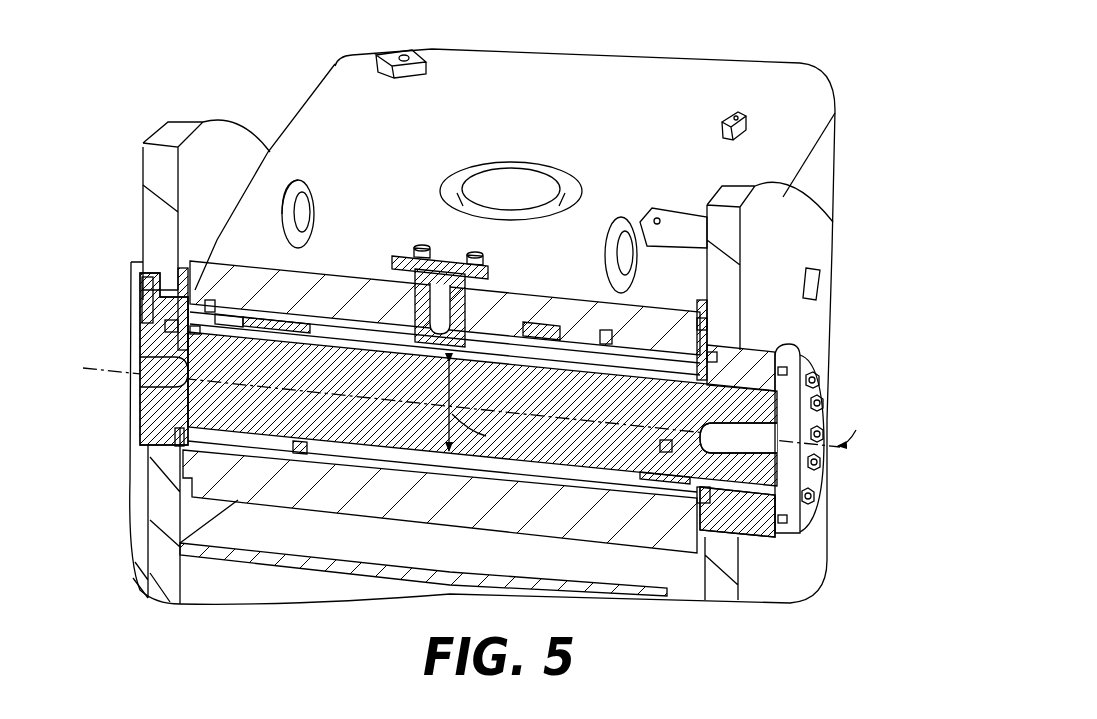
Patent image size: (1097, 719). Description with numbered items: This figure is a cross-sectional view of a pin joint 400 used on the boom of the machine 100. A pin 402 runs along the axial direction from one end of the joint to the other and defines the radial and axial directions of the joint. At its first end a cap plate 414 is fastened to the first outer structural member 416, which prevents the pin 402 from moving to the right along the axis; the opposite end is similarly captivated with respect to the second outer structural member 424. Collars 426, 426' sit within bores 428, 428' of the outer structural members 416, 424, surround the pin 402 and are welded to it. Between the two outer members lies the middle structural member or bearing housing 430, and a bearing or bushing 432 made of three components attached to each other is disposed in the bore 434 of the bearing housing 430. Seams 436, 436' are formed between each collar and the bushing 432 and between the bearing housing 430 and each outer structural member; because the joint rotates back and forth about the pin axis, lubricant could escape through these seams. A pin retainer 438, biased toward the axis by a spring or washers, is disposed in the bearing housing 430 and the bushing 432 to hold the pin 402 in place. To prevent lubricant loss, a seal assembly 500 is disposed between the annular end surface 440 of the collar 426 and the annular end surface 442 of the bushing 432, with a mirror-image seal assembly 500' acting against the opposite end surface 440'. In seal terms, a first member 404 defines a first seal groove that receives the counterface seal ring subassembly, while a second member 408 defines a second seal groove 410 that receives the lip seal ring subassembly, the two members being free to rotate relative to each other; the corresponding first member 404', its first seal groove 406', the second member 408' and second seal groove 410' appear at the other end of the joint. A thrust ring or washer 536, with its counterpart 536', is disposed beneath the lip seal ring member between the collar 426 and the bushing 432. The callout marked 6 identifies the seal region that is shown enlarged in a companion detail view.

The machine 100 is at (767, 42).
The pin joint 400 is at (567, 284).
The pin 402 is at (517, 399).
The first member 404 is at (123, 359).
The housing wall 404' is at (812, 450).
The bore 406' is at (738, 438).
The second member 408 is at (244, 281).
The bearing 408' is at (605, 343).
The second seal groove 410 is at (214, 344).
The seal 410' is at (738, 323).
The cap plate 414 is at (788, 492).
The first outer structural member 416 is at (803, 247).
The second outer structural member 424 is at (205, 150).
The collar 426 is at (164, 359).
The wall section 426' is at (737, 512).
The bore 428 is at (131, 254).
The side wall 428' is at (794, 356).
The bearing housing 430 is at (530, 325).
The bushing 432 is at (600, 332).
The bore 434 is at (377, 317).
The seam 436 is at (259, 235).
The mounting bracket 436' is at (673, 269).
The pin retainer 438 is at (441, 255).
The annular end surface 440 is at (123, 330).
The seal ring 440' is at (436, 512).
The annular end surface 442 is at (183, 327).
The seal assembly 500 is at (199, 272).
The clamp collar 500' is at (750, 339).
The thrust ring 536 is at (143, 358).
The shaft end 536' is at (738, 415).
The detail region of FIG. 6 is at (212, 300).